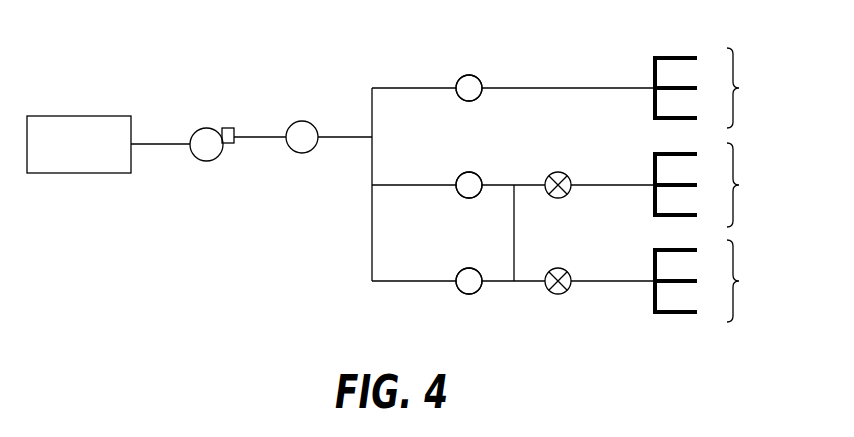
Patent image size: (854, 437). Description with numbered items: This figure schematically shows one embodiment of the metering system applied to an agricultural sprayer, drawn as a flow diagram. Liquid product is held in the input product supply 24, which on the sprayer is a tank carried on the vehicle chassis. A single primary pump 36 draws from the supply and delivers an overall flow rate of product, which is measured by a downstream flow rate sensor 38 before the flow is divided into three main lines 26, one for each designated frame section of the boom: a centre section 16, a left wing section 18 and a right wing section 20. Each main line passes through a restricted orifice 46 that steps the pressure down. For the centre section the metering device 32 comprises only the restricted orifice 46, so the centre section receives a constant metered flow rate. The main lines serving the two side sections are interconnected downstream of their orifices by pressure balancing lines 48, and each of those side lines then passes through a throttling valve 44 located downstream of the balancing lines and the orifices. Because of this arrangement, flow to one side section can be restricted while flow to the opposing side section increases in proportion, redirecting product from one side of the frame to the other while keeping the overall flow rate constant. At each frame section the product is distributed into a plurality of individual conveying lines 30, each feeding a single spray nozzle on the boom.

The input product supply 24 is at (78, 114).
The pump 36 is at (205, 128).
The flow rate sensor 38 is at (300, 121).
The main lines 26 is at (392, 86).
The restricted orifice 46 is at (460, 78).
The metering device 32 is at (480, 79).
The throttling valve 44 is at (567, 176).
The pressure balancing lines 48 is at (516, 236).
The individual conveying lines 30 is at (672, 117).
The centre section 16 is at (713, 88).
The left wing section 18 is at (712, 185).
The right wing section 20 is at (712, 281).